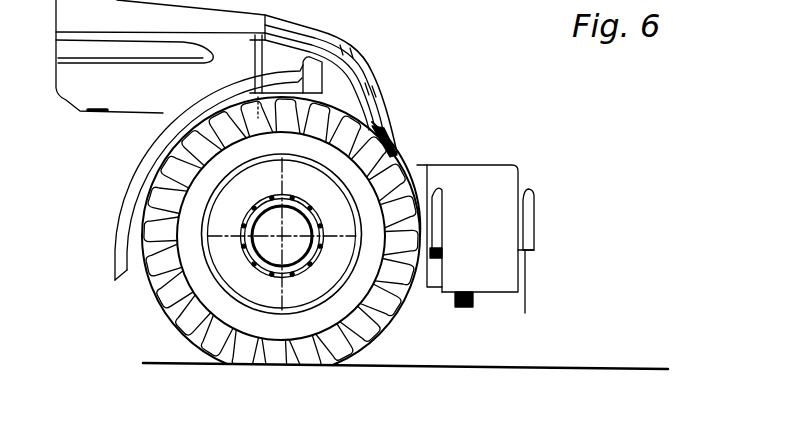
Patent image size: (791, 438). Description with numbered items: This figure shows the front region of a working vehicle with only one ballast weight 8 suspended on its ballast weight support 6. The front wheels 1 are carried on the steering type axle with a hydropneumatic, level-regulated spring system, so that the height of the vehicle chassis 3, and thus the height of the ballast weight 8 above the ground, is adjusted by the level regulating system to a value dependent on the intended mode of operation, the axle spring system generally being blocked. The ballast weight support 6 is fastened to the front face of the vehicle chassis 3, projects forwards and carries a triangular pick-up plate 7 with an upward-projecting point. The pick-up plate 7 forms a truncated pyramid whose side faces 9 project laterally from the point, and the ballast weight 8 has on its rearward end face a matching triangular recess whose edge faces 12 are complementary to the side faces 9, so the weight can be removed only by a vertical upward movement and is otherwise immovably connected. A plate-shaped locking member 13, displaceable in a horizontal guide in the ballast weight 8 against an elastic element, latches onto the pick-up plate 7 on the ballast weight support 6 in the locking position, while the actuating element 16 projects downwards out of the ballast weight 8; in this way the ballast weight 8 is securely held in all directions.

The front wheels 1 is at (163, 292).
The vehicle chassis 3 is at (373, 56).
The ballast weight support 6 is at (417, 167).
The pick-up plate 7 is at (535, 209).
The ballast weight 8 is at (481, 172).
The side faces 9 is at (526, 251).
The edge faces 12 is at (527, 298).
The locking member 13 is at (432, 290).
The actuating element 16 is at (463, 308).